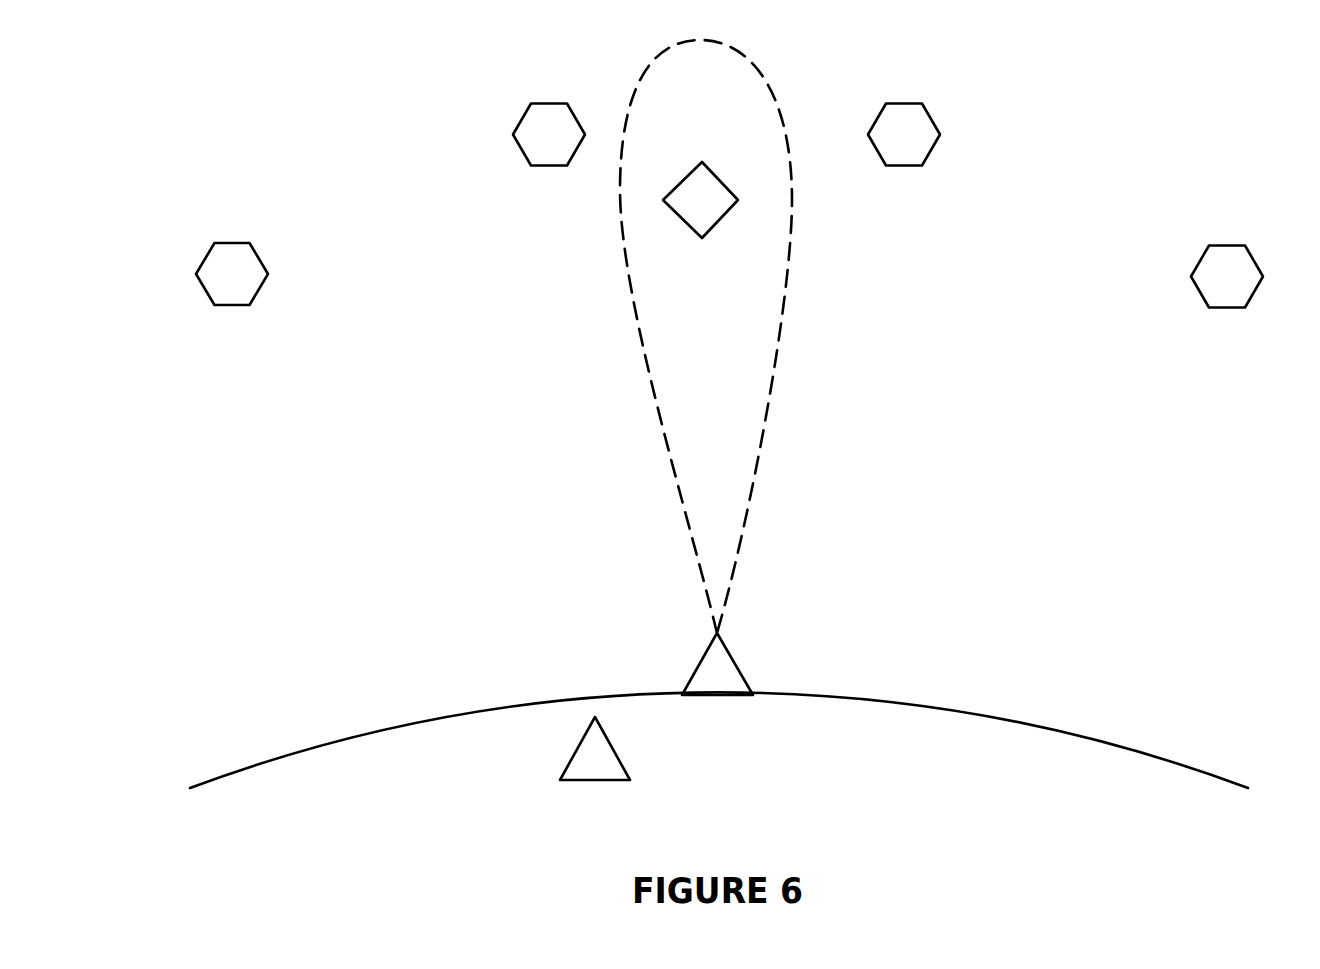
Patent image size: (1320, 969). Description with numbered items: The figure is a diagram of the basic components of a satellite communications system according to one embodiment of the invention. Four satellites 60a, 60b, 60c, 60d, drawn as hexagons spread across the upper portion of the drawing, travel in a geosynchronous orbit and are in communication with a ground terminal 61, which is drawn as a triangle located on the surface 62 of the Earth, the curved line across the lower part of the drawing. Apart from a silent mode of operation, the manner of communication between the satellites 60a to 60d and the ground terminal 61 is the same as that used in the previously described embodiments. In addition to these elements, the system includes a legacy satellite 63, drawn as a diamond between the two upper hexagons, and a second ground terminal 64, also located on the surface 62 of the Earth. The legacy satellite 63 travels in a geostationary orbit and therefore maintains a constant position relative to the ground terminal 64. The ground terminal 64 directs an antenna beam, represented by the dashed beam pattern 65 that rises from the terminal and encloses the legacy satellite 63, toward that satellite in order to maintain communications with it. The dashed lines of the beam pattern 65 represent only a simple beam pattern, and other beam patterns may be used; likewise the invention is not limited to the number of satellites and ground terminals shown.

The satellite 60a is at (256, 288).
The satellite 60b is at (543, 166).
The satellite 60c is at (905, 166).
The satellite 60d is at (1211, 307).
The ground terminal 61 is at (627, 772).
The surface of the Earth 62 is at (1180, 768).
The legacy satellite 63 is at (712, 174).
The ground terminal 64 is at (744, 673).
The beam pattern 65 is at (661, 432).